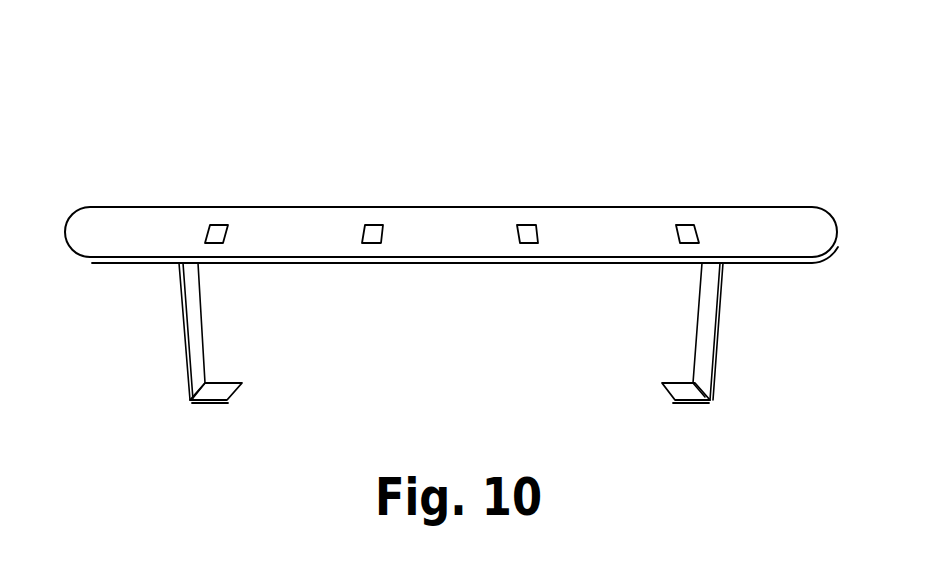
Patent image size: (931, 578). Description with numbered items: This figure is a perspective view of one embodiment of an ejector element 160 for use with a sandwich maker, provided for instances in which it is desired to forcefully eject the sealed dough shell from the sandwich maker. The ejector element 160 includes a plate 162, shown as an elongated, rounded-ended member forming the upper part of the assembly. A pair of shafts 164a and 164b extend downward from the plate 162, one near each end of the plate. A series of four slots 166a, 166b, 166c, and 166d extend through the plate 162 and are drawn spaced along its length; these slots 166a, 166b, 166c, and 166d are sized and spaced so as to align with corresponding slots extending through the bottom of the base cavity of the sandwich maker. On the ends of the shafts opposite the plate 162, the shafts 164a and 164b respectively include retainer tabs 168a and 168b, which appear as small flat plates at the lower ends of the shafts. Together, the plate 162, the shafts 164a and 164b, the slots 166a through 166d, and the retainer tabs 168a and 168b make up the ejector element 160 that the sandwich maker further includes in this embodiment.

The ejector element 160 is at (634, 92).
The plate 162 is at (797, 236).
The shaft 164a is at (184, 330).
The shaft 164b is at (718, 331).
The slot 166a is at (220, 225).
The slot 166b is at (373, 225).
The slot 166c is at (527, 225).
The slot 166d is at (688, 225).
The retainer tab 168a is at (207, 402).
The retainer tab 168b is at (693, 403).